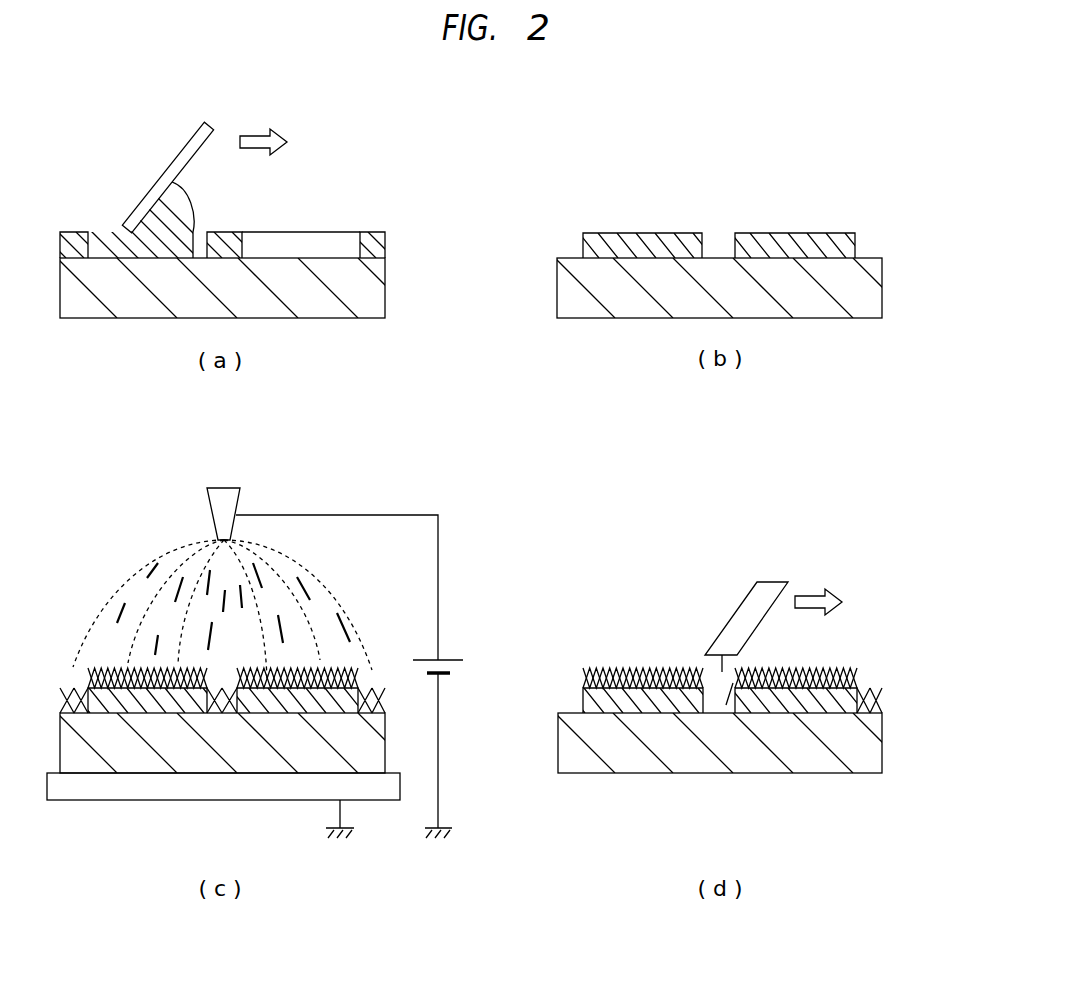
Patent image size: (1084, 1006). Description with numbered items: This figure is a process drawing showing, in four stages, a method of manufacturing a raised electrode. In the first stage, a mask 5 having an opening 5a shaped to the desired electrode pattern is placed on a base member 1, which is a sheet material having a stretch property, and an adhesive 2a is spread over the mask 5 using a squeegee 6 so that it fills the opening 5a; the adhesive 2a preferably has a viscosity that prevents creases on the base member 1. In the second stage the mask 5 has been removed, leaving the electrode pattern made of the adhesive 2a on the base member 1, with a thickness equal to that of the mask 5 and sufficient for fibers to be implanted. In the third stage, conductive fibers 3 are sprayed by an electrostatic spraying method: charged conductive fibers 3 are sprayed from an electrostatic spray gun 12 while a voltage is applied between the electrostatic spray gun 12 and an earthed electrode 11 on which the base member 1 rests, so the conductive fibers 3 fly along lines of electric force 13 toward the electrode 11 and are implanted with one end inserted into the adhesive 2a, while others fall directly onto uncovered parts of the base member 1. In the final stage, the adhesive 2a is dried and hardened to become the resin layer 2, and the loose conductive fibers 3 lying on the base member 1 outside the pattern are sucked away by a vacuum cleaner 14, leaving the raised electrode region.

The base member 1 is at (385, 285).
The resin layer 2 is at (857, 690).
The adhesive 2a is at (191, 195).
The conductive fibers 3 is at (300, 586).
The mask 5 is at (385, 243).
The opening 5a is at (360, 244).
The squeegee 6 is at (186, 145).
The electrode 11 is at (102, 800).
The electrostatic spray gun 12 is at (242, 495).
The line of electric force 13 is at (175, 537).
The vacuum cleaner 14 is at (740, 600).